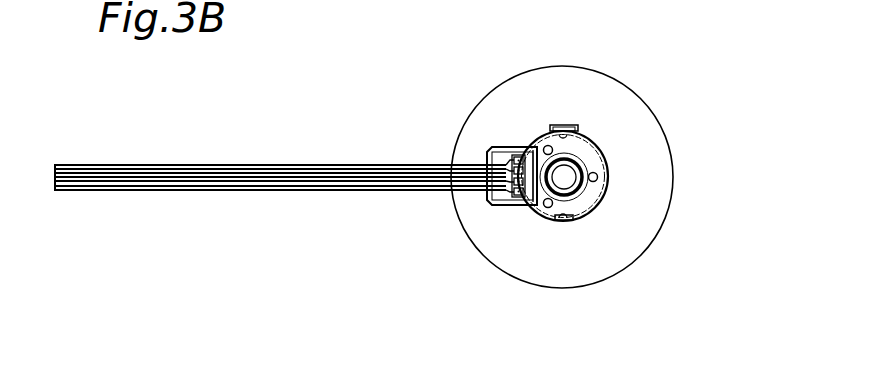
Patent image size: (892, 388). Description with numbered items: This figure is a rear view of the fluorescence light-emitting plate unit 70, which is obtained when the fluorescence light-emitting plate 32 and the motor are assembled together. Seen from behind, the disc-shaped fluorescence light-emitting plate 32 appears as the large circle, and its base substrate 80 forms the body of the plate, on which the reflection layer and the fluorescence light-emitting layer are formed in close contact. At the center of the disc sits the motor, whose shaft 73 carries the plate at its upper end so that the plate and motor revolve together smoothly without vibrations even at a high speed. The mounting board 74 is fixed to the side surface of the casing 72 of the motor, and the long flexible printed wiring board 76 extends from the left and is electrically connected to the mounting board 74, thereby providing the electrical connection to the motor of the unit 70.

The fluorescence light-emitting plate 32 is at (690, 152).
The fluorescence light-emitting plate unit 70 is at (688, 262).
The casing 72 is at (582, 182).
The shaft 73 is at (566, 165).
The mounting board 74 is at (582, 200).
The flexible printed wiring board 76 is at (445, 190).
The base substrate 80 is at (528, 257).